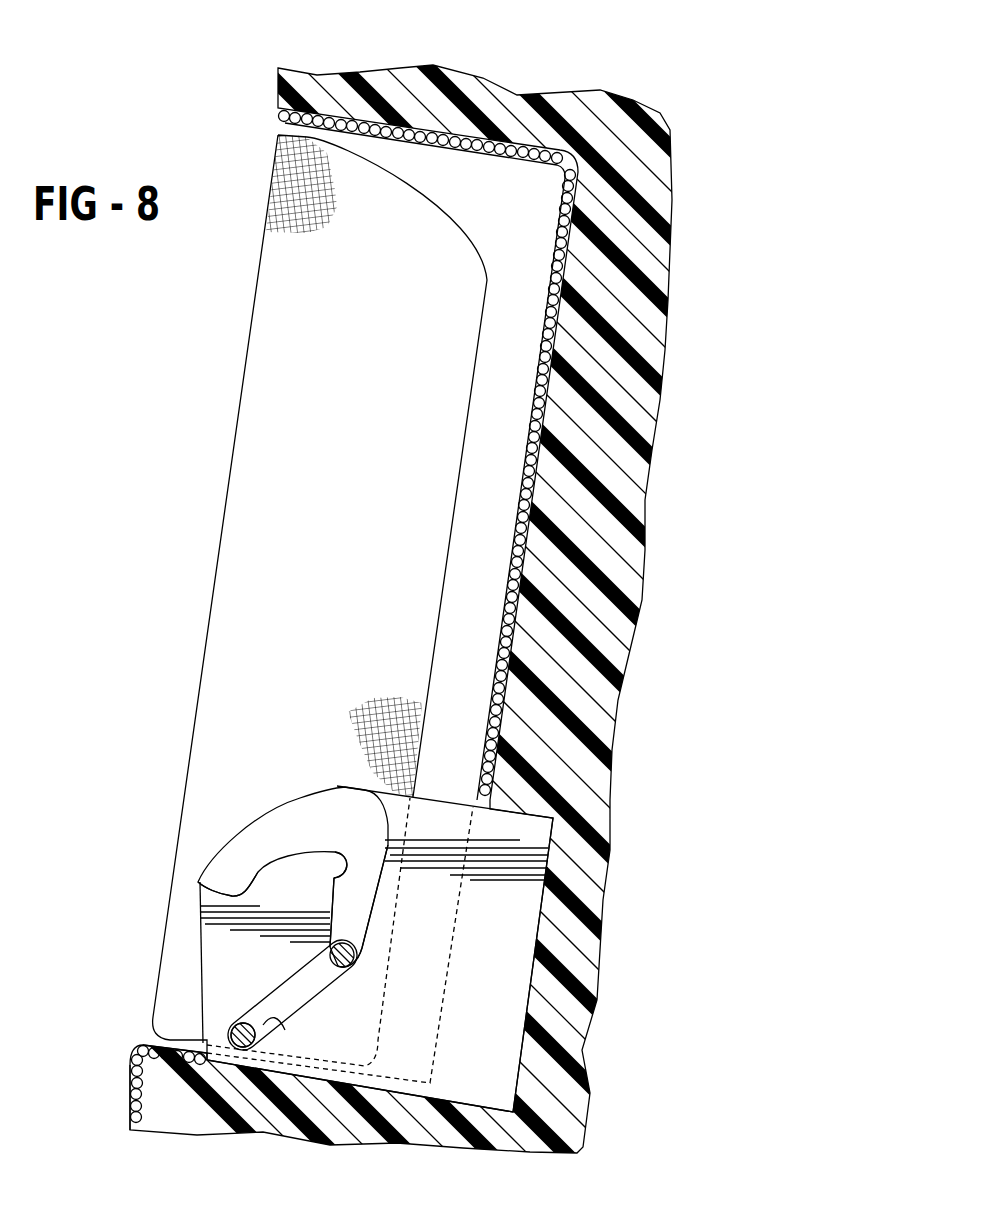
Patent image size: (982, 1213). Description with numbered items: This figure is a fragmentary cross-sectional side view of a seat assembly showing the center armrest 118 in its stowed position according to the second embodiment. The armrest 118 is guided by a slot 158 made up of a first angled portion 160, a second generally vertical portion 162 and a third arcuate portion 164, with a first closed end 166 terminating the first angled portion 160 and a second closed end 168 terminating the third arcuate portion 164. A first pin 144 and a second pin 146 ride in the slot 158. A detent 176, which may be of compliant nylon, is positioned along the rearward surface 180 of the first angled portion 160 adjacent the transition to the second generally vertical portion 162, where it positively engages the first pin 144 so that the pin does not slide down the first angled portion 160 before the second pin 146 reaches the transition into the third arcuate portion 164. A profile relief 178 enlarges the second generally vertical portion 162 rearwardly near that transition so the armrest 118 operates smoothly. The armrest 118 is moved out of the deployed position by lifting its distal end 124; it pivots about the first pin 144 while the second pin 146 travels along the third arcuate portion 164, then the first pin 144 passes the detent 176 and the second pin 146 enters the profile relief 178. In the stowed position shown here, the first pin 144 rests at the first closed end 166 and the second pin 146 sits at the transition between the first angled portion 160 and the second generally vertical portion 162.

The distal end 124 is at (340, 148).
The armrest 118 is at (262, 405).
The third arcuate portion 164 is at (293, 825).
The second closed end 168 is at (220, 888).
The slot 158 is at (343, 875).
The first closed end 166 is at (203, 1038).
The second generally vertical portion 162 is at (377, 897).
The first angled portion 160 is at (310, 1000).
The detent 176 is at (337, 970).
The second pin 146 is at (360, 960).
The first pin 144 is at (242, 1030).
The rearward surface 180 is at (263, 1022).
The profile relief 178 is at (393, 843).